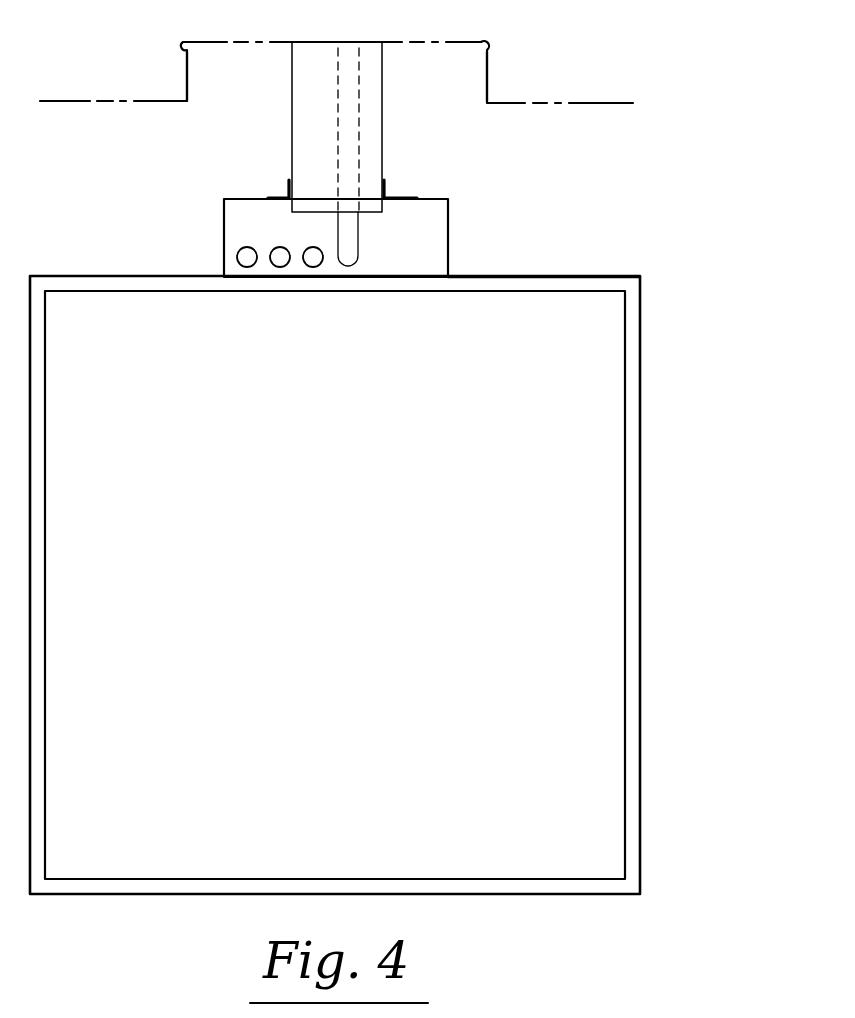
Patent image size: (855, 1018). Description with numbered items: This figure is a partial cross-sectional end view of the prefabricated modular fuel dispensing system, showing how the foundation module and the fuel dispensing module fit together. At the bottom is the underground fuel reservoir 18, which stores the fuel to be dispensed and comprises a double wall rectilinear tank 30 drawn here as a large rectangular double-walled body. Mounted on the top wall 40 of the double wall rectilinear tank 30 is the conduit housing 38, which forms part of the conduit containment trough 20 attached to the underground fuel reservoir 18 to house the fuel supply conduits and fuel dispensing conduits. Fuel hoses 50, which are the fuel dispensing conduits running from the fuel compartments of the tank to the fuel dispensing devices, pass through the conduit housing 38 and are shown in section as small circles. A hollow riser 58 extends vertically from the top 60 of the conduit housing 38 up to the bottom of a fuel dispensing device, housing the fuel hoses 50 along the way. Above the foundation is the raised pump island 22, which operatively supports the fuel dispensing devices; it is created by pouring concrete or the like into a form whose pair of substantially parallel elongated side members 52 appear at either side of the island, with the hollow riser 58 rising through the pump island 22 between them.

The underground fuel reservoir 18 is at (672, 426).
The conduit containment trough 20 is at (164, 212).
The raised pump island 22 is at (157, 28).
The double wall rectilinear tank 30 is at (641, 545).
The conduit housing 38 is at (448, 226).
The top wall 40 is at (552, 277).
The fuel hose 50 is at (280, 247).
The elongated side member 52 is at (187, 77).
The hollow riser 58 is at (292, 135).
The top 60 is at (417, 197).